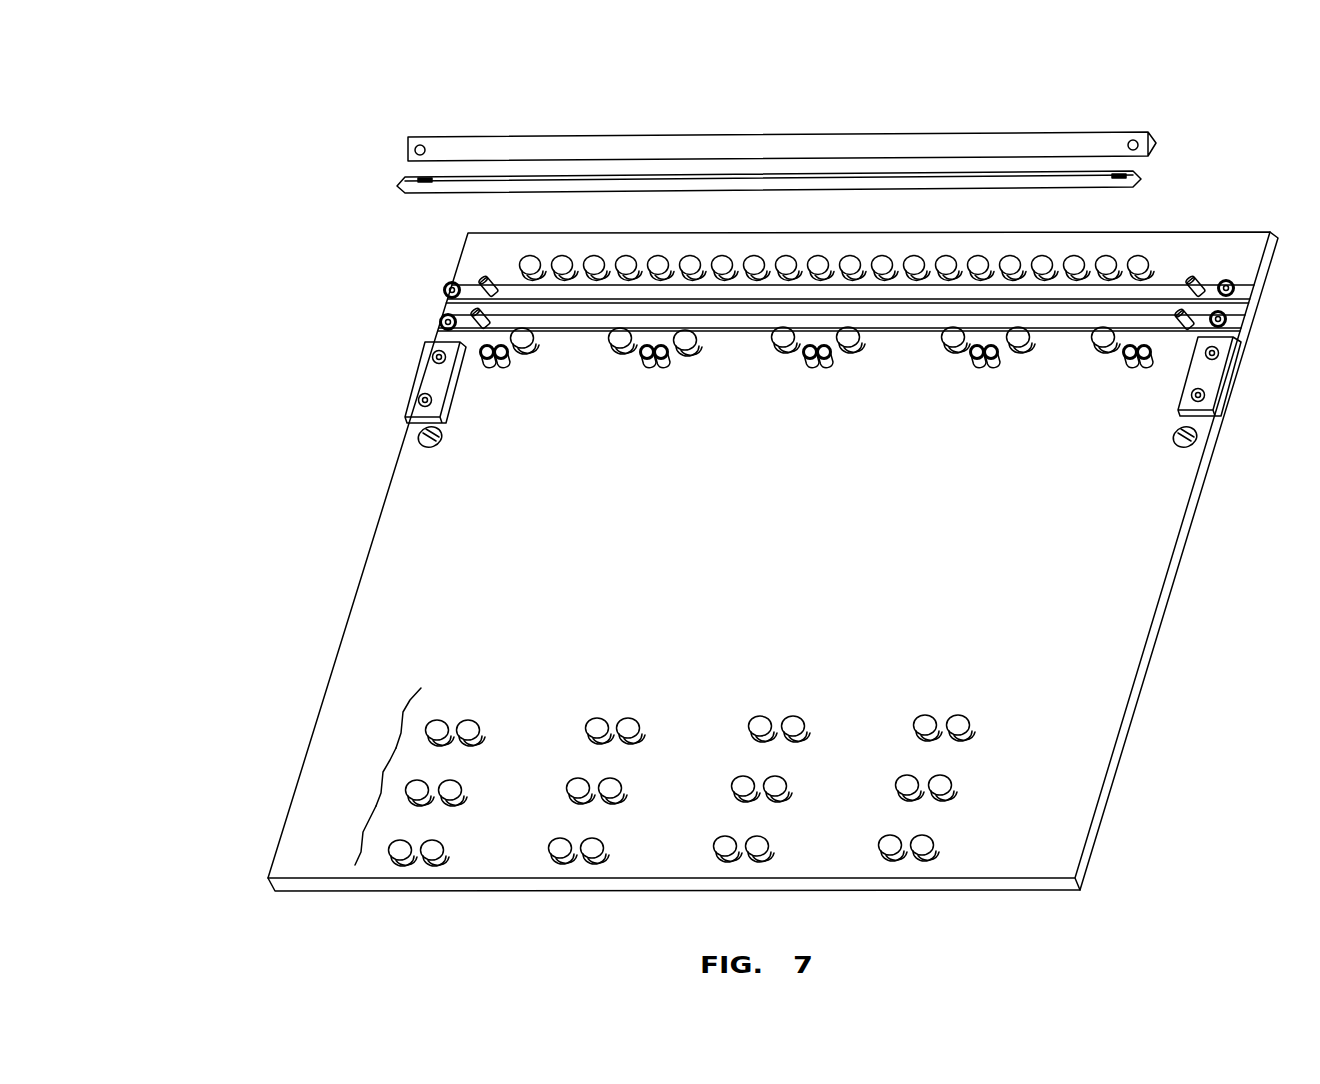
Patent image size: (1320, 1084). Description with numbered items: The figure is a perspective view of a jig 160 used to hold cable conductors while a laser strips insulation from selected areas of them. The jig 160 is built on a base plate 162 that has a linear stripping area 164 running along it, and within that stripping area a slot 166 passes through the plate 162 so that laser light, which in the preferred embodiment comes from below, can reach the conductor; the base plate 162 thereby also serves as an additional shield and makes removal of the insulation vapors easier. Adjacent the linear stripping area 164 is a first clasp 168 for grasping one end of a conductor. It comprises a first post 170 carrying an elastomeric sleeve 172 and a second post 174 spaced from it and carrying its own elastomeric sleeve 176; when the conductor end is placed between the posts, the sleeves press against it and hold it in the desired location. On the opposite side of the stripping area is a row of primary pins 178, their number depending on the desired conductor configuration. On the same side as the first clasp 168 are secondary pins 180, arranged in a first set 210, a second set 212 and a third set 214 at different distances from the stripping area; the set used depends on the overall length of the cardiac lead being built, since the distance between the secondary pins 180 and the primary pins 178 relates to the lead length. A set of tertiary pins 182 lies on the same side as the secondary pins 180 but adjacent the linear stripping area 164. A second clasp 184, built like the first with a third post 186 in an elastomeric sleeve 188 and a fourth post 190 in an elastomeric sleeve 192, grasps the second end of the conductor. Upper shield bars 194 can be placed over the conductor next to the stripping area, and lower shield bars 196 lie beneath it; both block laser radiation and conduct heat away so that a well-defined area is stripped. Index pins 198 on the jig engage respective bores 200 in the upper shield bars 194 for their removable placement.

The jig 160 is at (285, 468).
The base plate 162 is at (362, 637).
The linear stripping area 164 is at (523, 313).
The slot 166 is at (1150, 307).
The first clasp 168 is at (498, 360).
The first post 170 is at (486, 352).
The elastomeric sleeve 172 is at (425, 372).
The second post 174 is at (520, 353).
The elastomeric sleeve 176 is at (512, 358).
The primary pins 178 is at (688, 260).
The secondary pins 180 is at (466, 728).
The tertiary pins 182 is at (528, 342).
The second clasp 184 is at (673, 352).
The third post 186 is at (633, 355).
The elastomeric sleeve 188 is at (648, 358).
The fourth post 190 is at (662, 363).
The elastomeric sleeve 192 is at (668, 360).
The upper shield bar 194 is at (701, 143).
The lower shield bar 196 is at (444, 293).
The index pins 198 is at (481, 315).
The bore 200 is at (425, 148).
The first set of secondary pins 210 is at (401, 712).
The second set of secondary pins 212 is at (383, 771).
The third set of secondary pins 214 is at (364, 832).